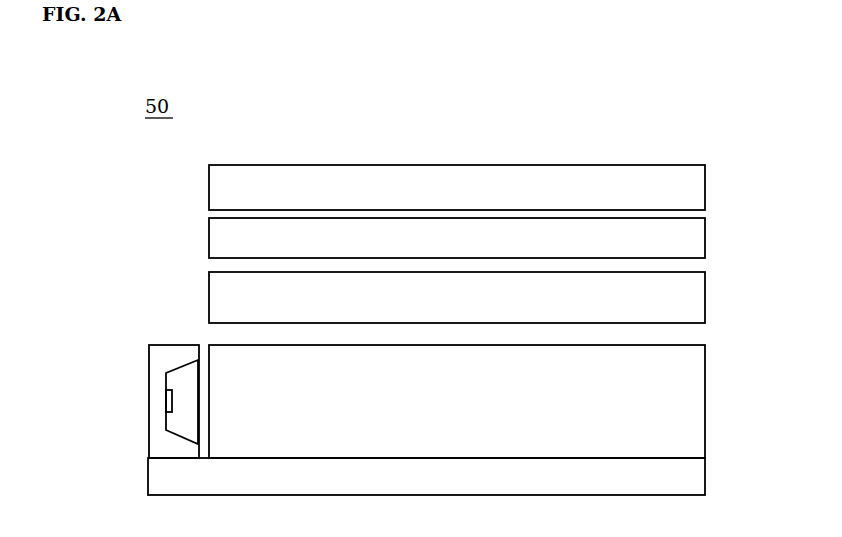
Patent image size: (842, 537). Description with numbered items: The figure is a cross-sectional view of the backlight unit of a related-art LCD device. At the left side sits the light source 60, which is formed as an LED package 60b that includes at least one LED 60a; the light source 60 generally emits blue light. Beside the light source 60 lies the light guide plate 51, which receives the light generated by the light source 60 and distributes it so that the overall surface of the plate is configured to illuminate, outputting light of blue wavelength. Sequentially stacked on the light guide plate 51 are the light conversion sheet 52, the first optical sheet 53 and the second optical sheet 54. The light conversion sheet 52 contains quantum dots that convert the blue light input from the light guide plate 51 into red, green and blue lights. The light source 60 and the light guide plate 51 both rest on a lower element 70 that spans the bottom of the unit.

The light guide plate 51 is at (705, 405).
The light conversion sheet 52 is at (705, 303).
The first optical sheet 53 is at (705, 238).
The second optical sheet 54 is at (705, 190).
The light source 60 is at (83, 355).
The LED 60a is at (168, 407).
The LED package 60b is at (155, 361).
The bottom chassis 70 is at (705, 480).